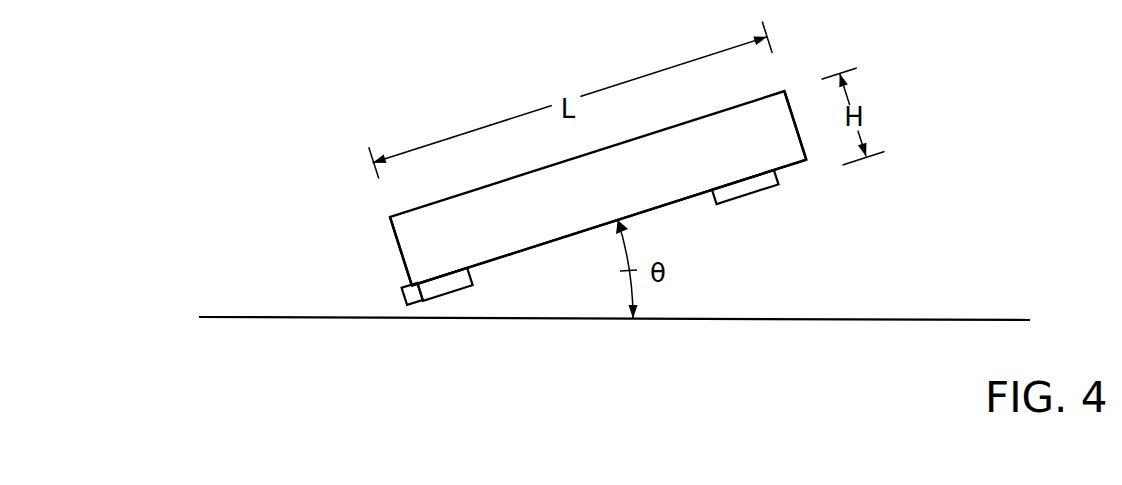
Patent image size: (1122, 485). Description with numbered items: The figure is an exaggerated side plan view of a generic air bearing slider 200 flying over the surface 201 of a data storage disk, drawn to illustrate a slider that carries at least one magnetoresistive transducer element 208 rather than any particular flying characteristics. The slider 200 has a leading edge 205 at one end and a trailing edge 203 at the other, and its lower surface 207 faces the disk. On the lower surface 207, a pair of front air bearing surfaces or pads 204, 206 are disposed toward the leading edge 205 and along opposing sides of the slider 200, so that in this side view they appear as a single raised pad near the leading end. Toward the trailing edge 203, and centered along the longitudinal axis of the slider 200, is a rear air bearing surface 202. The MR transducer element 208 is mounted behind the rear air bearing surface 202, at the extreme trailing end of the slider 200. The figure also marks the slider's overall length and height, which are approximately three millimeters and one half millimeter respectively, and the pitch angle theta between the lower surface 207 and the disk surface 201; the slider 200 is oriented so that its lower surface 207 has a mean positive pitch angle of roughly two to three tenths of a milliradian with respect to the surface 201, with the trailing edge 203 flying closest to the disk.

The air bearing slider 200 is at (557, 211).
The surface of the data storage disk 201 is at (882, 320).
The rear air bearing surface 202 is at (468, 286).
The trailing edge 203 is at (399, 244).
The front air bearing pad 204 is at (785, 205).
The leading edge 205 is at (792, 108).
The front air bearing pad 206 is at (747, 197).
The lower surface 207 is at (648, 213).
The MR transducer element 208 is at (401, 292).